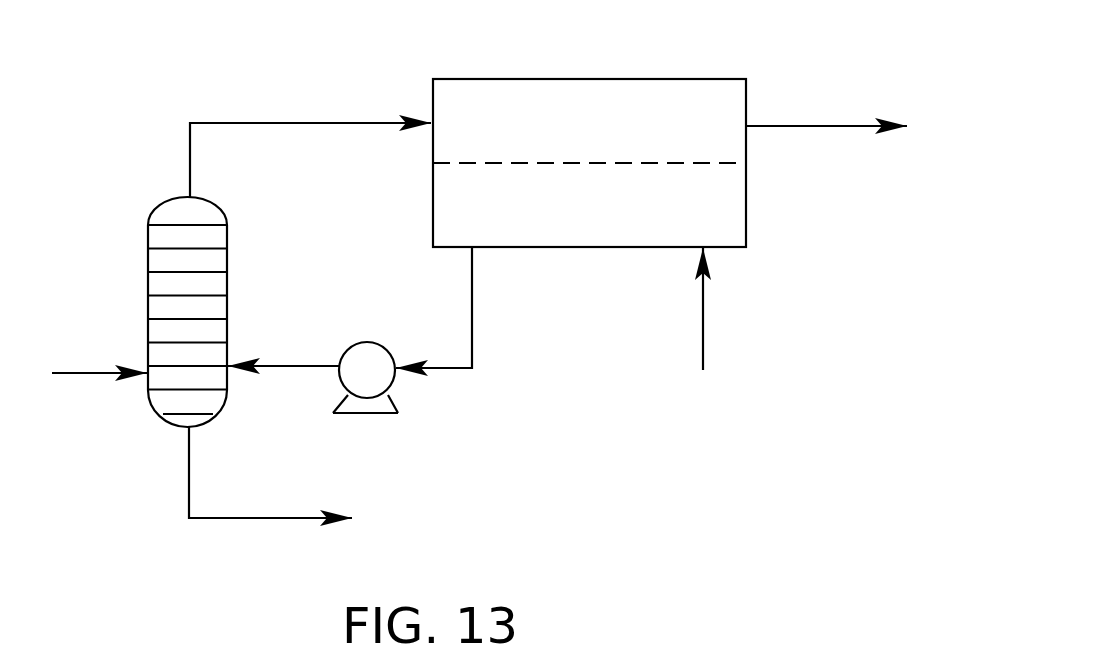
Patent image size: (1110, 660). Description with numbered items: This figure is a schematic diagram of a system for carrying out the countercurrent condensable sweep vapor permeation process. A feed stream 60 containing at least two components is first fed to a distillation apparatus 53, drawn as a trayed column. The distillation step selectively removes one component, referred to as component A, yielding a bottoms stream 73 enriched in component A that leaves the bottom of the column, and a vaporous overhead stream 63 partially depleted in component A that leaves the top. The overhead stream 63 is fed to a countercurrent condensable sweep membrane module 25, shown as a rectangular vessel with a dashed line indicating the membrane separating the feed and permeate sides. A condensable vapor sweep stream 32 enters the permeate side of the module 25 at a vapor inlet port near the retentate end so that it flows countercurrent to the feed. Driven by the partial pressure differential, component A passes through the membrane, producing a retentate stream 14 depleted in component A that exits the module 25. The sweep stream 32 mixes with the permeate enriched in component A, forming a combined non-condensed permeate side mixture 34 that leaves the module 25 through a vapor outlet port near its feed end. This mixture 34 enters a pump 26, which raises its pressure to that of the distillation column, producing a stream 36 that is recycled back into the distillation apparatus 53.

The distillation apparatus 53 is at (155, 218).
The vaporous overhead stream 63 is at (310, 139).
The countercurrent condensable sweep membrane module 25 is at (597, 79).
The retentate stream 14 is at (826, 104).
The combined non-condensed permeate side mixture 34 is at (461, 307).
The condensable vapor sweep stream 32 is at (730, 309).
The pump 26 is at (363, 415).
The stream 36 is at (283, 345).
The feed stream 60 is at (97, 352).
The bottoms stream 73 is at (270, 472).